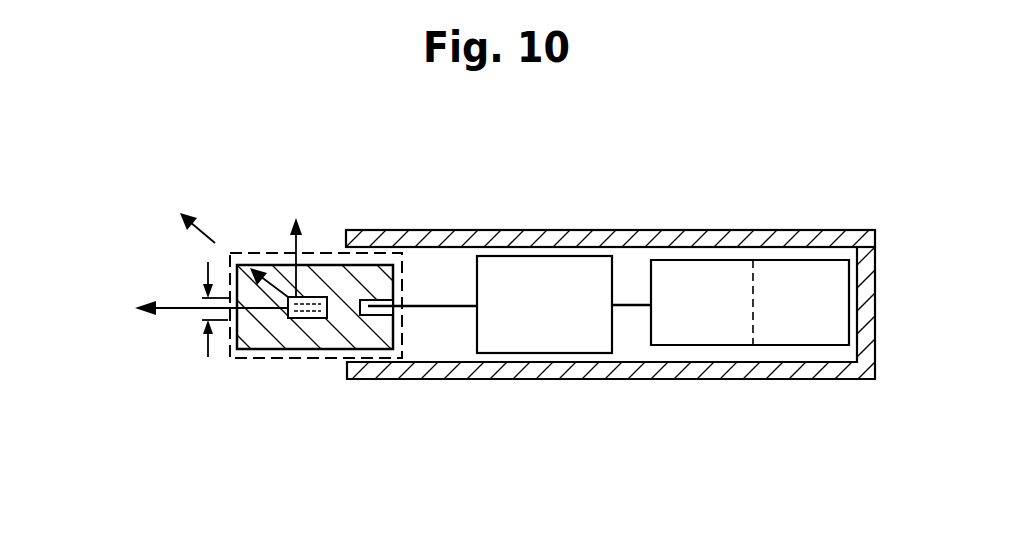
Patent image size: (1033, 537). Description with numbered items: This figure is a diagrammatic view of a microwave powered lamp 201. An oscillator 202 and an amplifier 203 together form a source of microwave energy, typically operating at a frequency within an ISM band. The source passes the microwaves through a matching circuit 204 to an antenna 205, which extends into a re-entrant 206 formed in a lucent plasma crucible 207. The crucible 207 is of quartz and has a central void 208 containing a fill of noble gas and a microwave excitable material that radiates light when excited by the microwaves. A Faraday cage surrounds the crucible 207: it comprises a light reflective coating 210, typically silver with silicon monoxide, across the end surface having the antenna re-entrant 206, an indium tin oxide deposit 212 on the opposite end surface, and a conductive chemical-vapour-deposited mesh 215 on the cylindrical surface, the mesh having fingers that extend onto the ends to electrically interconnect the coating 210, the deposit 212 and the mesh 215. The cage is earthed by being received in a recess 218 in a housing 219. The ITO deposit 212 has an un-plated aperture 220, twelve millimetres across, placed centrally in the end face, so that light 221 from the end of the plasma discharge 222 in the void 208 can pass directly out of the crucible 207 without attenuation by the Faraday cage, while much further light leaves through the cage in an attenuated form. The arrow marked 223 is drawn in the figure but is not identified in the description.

The lamp 201 is at (610, 236).
The oscillator 202 is at (803, 313).
The amplifier 203 is at (705, 313).
The matching circuit 204 is at (532, 313).
The antenna 205 is at (437, 308).
The re-entrant 206 is at (367, 315).
The lucent plasma crucible 207 is at (315, 332).
The central void 208 is at (288, 325).
The light reflective coating 210 is at (397, 286).
The indium tin oxide deposit 212 is at (232, 283).
The conductive mesh 215 is at (314, 316).
The recess 218 is at (445, 263).
The housing 219 is at (523, 232).
The aperture 220 is at (207, 345).
The light 221 is at (184, 313).
The plasma discharge 222 is at (311, 297).
The field direction arrow 223 is at (203, 230).